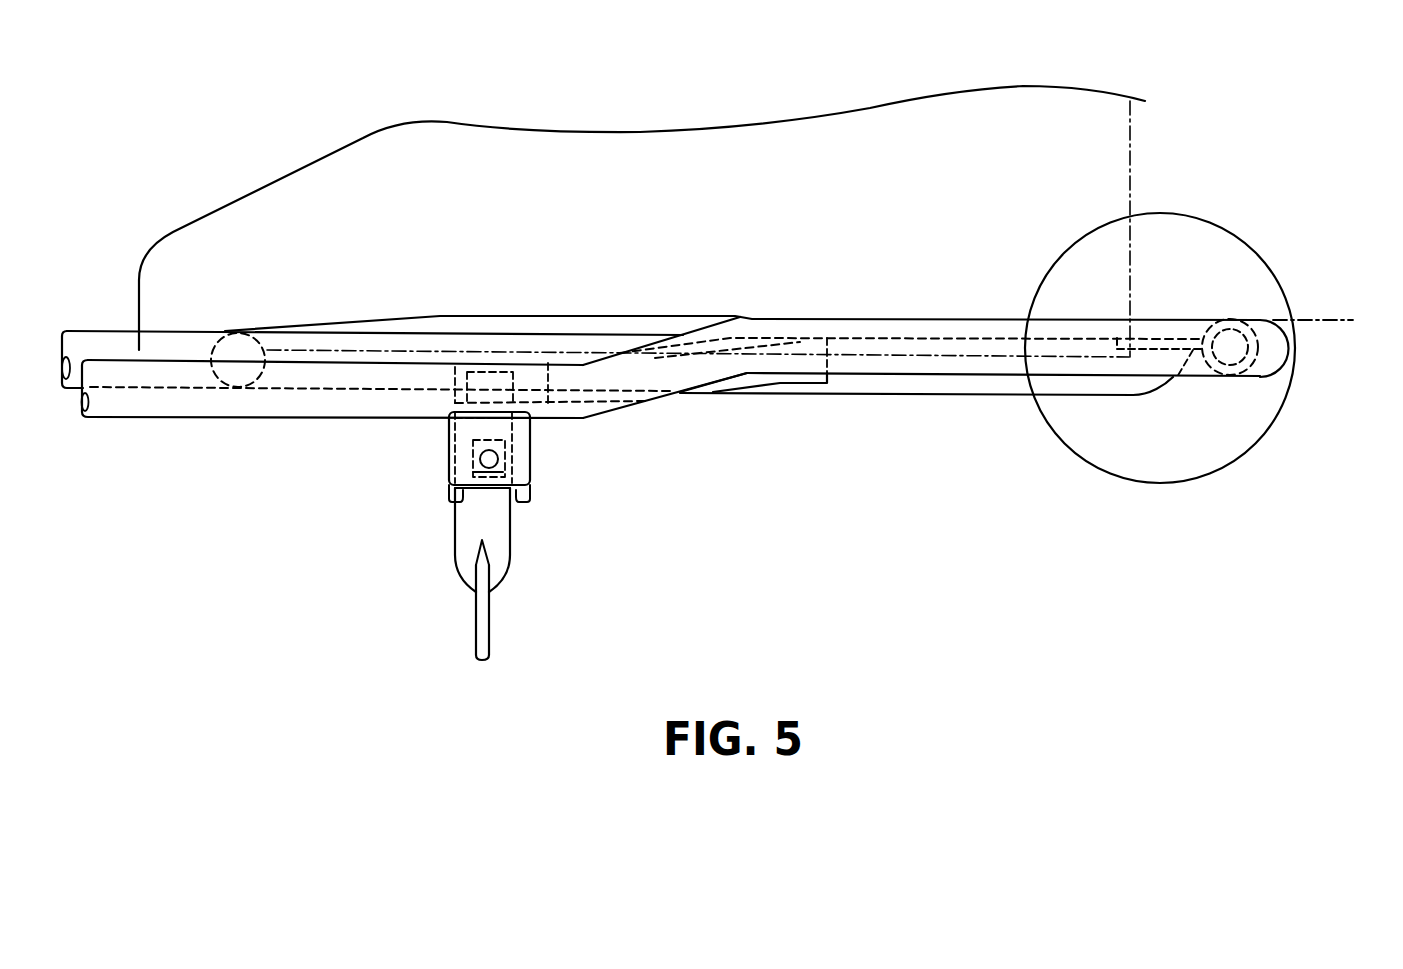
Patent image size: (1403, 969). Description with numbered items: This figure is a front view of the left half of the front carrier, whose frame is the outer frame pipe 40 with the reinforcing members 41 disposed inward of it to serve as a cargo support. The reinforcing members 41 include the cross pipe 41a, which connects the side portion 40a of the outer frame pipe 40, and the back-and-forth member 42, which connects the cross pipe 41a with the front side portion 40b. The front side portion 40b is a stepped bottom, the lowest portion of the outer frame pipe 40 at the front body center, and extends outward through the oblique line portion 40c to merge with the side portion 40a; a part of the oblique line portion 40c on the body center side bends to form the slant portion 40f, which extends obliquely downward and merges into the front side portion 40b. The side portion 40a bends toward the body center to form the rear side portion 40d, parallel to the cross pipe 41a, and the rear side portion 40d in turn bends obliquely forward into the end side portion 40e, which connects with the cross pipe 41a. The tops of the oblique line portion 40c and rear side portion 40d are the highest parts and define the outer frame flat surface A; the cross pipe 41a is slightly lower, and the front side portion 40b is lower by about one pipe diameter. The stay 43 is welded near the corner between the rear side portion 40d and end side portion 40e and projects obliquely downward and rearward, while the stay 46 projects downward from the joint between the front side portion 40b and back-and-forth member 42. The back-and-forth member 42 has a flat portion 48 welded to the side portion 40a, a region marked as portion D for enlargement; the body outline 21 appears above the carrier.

The vehicle body 21 is at (357, 138).
The reinforcing members 41 is at (582, 273).
The cross pipe 41a is at (97, 333).
The outer frame pipe 40 is at (742, 309).
The side portion 40a is at (1283, 349).
The front side portion 40b is at (172, 410).
The oblique line portion 40c is at (978, 375).
The rear side portion 40d is at (641, 318).
The end side portion 40e is at (430, 318).
The slant portion 40f is at (683, 373).
The back-and-forth member 42 is at (783, 377).
The stay 43 is at (468, 525).
The stay 46 is at (449, 433).
The flat portion 48 is at (1160, 328).
The portion D is at (1093, 472).
The outer frame flat surface A is at (1320, 317).